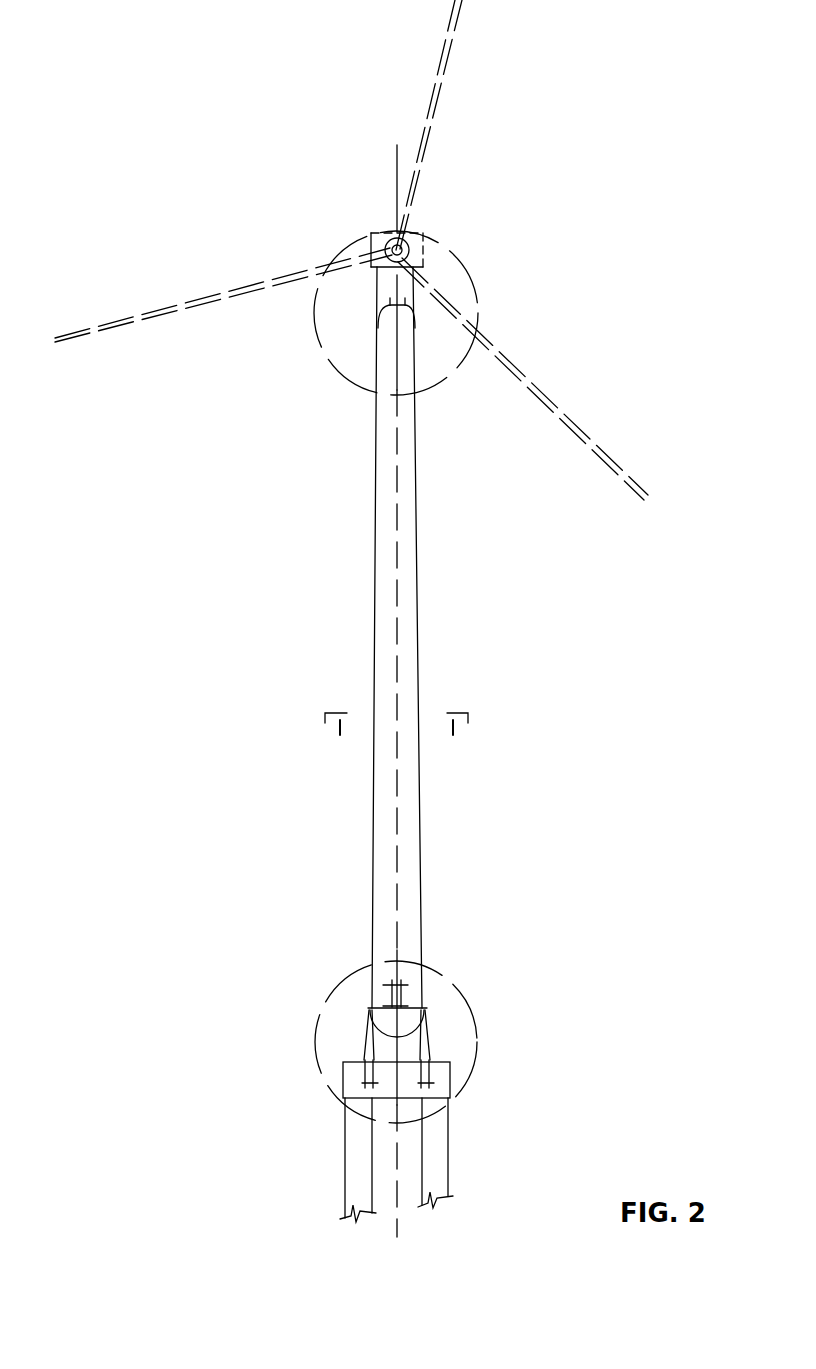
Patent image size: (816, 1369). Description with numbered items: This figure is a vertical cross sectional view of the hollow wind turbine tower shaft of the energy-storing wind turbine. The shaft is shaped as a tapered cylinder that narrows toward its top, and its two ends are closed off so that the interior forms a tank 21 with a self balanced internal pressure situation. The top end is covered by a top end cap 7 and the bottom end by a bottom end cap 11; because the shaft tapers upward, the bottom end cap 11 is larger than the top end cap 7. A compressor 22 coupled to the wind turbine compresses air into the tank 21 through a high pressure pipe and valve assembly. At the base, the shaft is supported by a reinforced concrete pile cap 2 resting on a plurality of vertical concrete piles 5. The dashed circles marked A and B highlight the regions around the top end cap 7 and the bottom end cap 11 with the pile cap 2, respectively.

The compressor 22 is at (385, 243).
The tank 21 is at (402, 658).
The top end cap 7 is at (405, 304).
The bottom end cap 11 is at (410, 1040).
The reinforced concrete pile cap 2 is at (440, 1085).
The vertical concrete piles 5 is at (435, 1128).
The detail area A is at (460, 268).
The detail area B is at (458, 990).